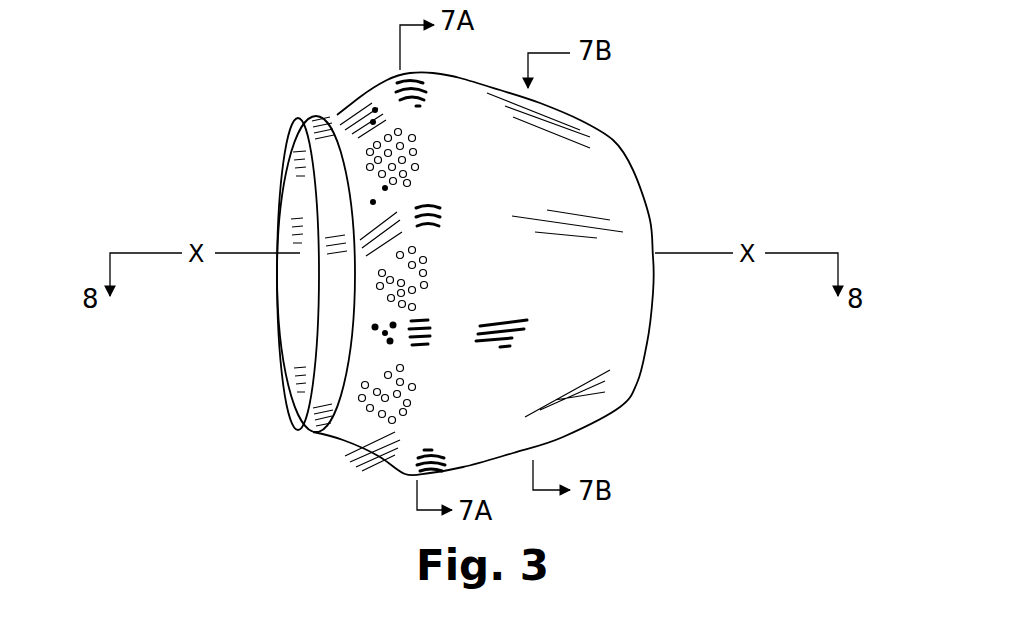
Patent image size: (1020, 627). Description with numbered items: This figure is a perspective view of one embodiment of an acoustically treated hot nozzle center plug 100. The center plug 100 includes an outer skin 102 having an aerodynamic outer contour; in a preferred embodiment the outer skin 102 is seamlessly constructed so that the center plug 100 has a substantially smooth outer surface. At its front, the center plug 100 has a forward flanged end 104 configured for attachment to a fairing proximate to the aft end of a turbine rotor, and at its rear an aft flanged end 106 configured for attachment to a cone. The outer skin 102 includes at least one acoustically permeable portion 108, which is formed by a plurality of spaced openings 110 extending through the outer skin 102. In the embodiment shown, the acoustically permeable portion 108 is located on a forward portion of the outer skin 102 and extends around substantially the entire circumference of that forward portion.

The center plug 100 is at (624, 104).
The outer skin 102 is at (550, 420).
The forward flanged end 104 is at (297, 373).
The aft flanged end 106 is at (617, 177).
The acoustically permeable portion 108 is at (382, 97).
The spaced openings 110 is at (373, 403).